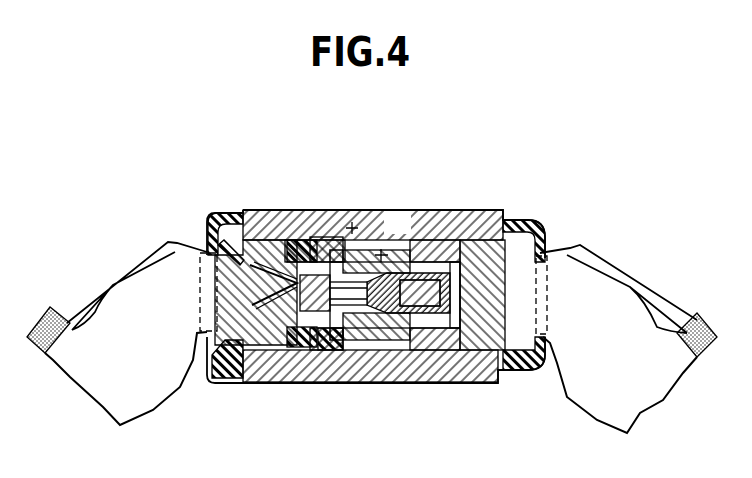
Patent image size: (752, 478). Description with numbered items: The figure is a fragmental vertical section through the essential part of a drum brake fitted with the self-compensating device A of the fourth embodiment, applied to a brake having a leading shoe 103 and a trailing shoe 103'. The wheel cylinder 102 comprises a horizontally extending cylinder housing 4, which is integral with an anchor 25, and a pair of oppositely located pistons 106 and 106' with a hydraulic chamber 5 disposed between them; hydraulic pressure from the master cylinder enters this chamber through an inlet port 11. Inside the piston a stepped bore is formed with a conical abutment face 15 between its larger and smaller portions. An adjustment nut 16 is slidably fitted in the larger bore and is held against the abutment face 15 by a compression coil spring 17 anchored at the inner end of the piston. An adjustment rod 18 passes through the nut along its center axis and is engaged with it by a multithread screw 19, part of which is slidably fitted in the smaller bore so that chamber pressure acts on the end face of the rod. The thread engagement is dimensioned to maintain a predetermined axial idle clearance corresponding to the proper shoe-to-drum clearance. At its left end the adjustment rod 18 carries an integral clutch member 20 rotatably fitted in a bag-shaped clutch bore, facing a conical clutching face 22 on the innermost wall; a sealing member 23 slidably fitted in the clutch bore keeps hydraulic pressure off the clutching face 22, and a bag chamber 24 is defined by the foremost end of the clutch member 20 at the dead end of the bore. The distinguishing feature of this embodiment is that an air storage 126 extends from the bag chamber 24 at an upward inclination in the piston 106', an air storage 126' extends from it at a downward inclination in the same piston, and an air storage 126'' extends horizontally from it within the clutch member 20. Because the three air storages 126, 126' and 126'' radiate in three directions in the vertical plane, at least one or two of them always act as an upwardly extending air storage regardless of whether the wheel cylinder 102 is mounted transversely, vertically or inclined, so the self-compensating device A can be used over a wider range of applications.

The cylinder housing 4 is at (421, 216).
The hydraulic chamber 5 is at (305, 236).
The inlet port 11 is at (352, 226).
The conical abutment face 15 is at (397, 222).
The adjustment nut 16 is at (370, 366).
The compression coil spring 17 is at (403, 327).
The adjustment rod 18 is at (345, 262).
The multithread screw 19 is at (418, 300).
The clutch member 20 is at (325, 354).
The conical clutching face 22 is at (300, 243).
The sealing member 23 is at (337, 342).
The bag chamber 24 is at (256, 292).
The anchor 25 is at (207, 276).
The wheel cylinder 102 is at (462, 212).
The leading shoe 103 is at (628, 339).
The trailing shoe 103' is at (117, 331).
The piston 106 is at (561, 295).
The piston 106' is at (182, 292).
The air storage 126 is at (241, 221).
The air storage 126' is at (239, 376).
The air storage 126'' is at (292, 372).
The self-compensating device A is at (380, 258).